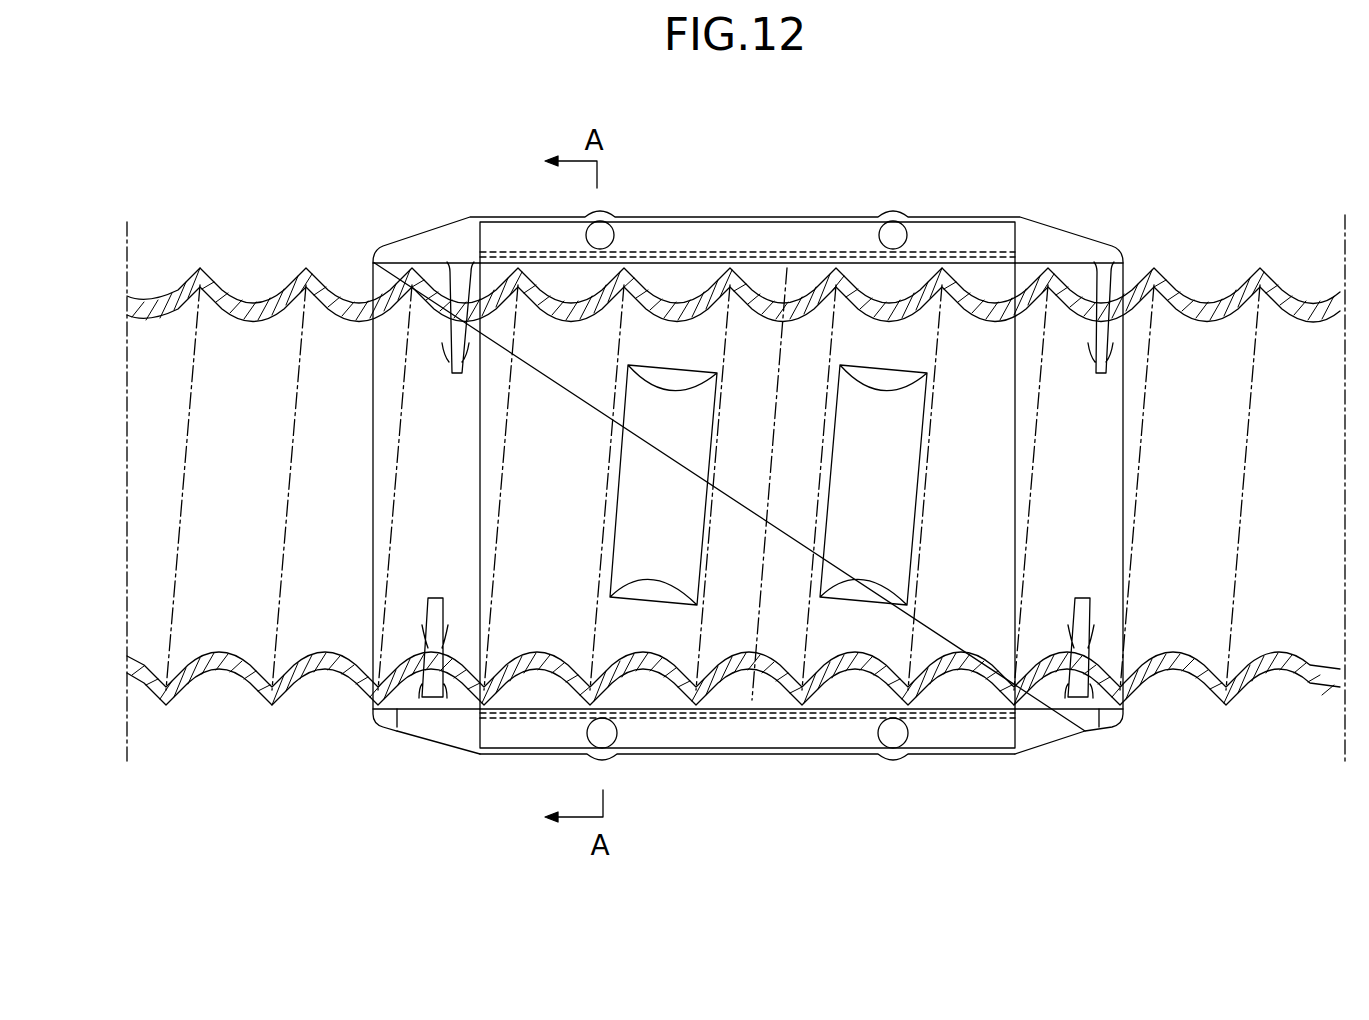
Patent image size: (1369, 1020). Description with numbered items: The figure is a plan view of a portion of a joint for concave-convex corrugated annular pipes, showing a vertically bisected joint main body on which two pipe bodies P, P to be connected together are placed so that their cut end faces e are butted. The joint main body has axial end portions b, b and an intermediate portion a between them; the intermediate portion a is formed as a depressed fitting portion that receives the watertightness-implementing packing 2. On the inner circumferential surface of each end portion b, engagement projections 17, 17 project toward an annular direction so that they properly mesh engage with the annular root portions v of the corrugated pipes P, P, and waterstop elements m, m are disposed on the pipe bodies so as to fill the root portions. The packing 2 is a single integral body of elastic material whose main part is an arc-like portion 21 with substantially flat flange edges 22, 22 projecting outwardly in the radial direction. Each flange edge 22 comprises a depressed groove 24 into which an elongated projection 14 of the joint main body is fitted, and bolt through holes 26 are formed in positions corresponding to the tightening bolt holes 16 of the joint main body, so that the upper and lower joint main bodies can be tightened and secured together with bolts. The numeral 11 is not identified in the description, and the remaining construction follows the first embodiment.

The watertightness-implementing packing 2 is at (765, 153).
The arc-like portion 21 is at (686, 282).
The flange edge 22 is at (742, 236).
The tightening bolt hole 16 is at (761, 490).
The bolt through hole 26 is at (893, 228).
The elongated projection 14 is at (747, 541).
The depressed groove 24 is at (707, 716).
The engagement projection 17 is at (453, 378).
The frame 11 is at (1110, 478).
The concave-convex corrugated annular pipe P is at (236, 252).
The root portion v is at (333, 276).
The waterstop element m is at (633, 480).
The cut end face e is at (768, 605).
The intermediate portion a is at (805, 740).
The axial end portion b is at (440, 737).